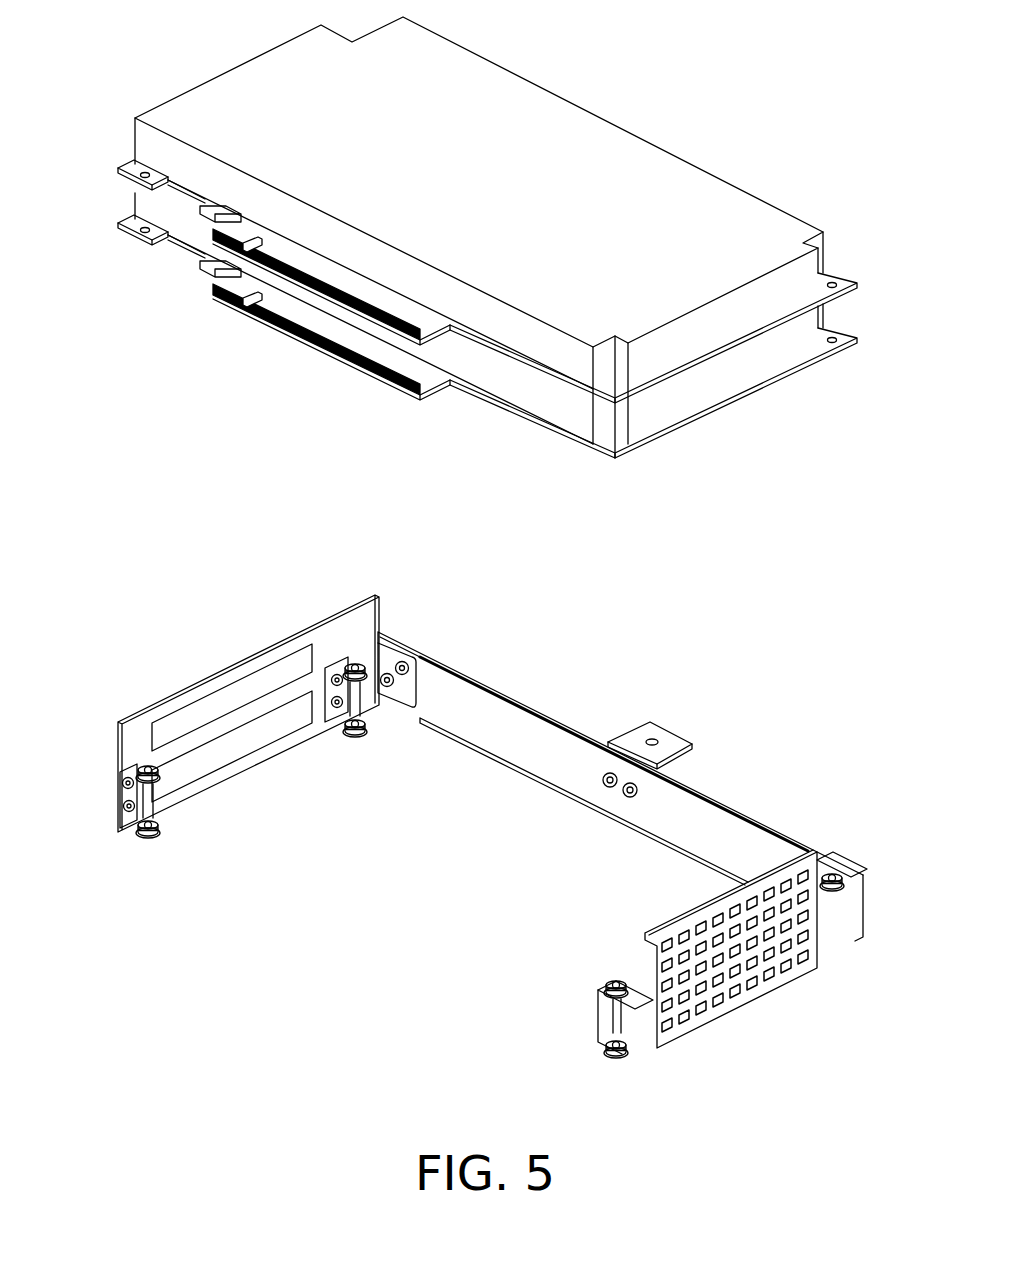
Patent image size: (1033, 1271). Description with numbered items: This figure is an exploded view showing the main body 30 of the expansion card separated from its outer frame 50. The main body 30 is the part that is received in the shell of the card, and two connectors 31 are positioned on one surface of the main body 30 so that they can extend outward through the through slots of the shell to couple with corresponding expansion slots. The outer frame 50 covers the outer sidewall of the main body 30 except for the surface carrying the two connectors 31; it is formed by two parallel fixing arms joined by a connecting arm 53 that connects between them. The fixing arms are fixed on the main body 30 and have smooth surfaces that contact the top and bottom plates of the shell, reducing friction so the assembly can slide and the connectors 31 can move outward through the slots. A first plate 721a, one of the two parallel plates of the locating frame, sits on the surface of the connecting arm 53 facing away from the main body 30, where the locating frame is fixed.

The main body 30 is at (272, 88).
The connector 31 is at (280, 327).
The outer frame 50 is at (473, 826).
The connecting arm 53 is at (620, 784).
The first plate 721a is at (675, 742).